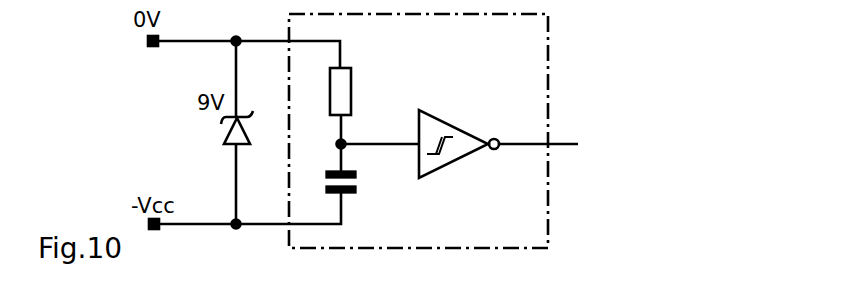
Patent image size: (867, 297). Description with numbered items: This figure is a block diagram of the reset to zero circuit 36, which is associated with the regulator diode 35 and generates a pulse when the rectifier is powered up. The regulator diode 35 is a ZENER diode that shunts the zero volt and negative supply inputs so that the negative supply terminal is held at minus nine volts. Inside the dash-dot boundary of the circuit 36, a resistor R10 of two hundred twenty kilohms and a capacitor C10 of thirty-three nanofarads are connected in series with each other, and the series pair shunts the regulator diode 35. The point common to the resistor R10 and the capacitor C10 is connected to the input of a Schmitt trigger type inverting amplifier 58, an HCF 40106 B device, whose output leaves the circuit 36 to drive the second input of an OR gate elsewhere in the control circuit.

The ZENER diode 35 is at (222, 134).
The reset to zero circuit 36 is at (551, 40).
The Schmitt trigger type inverting amplifier 58 is at (458, 123).
The resistor R10 is at (353, 84).
The capacitor C10 is at (358, 189).